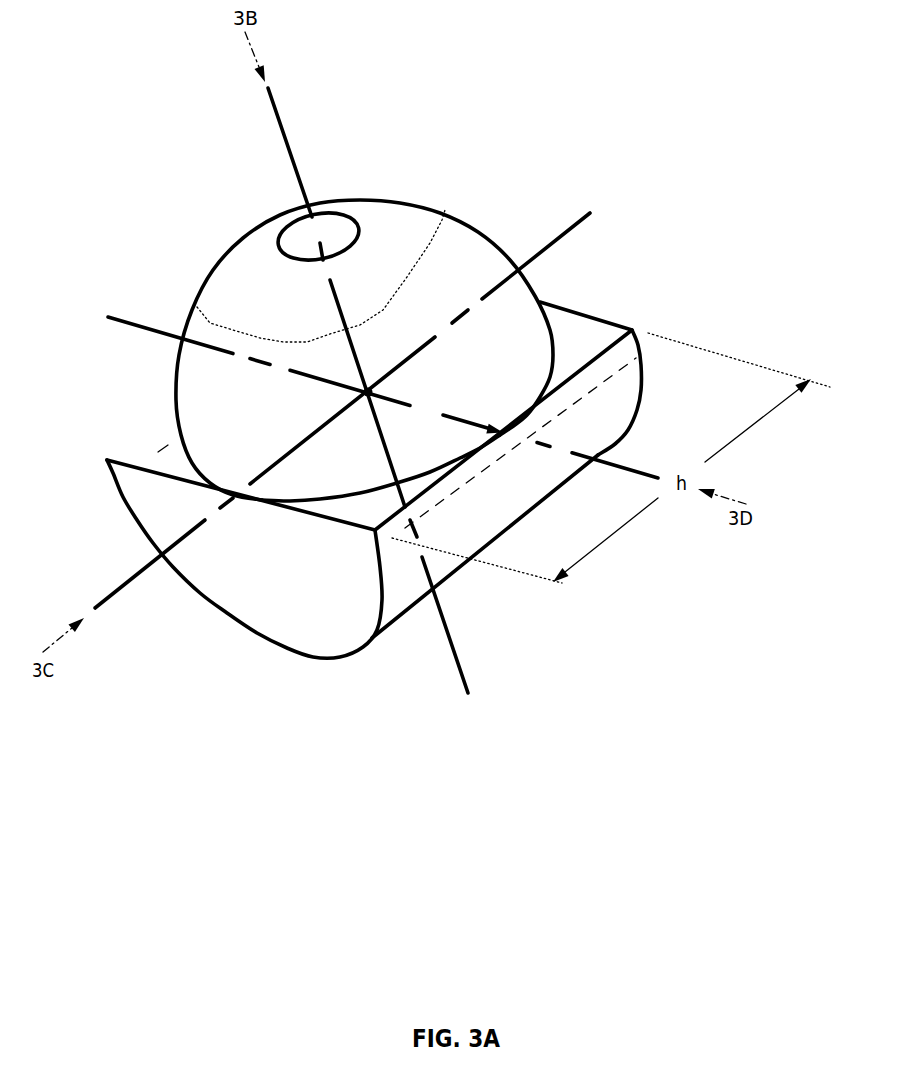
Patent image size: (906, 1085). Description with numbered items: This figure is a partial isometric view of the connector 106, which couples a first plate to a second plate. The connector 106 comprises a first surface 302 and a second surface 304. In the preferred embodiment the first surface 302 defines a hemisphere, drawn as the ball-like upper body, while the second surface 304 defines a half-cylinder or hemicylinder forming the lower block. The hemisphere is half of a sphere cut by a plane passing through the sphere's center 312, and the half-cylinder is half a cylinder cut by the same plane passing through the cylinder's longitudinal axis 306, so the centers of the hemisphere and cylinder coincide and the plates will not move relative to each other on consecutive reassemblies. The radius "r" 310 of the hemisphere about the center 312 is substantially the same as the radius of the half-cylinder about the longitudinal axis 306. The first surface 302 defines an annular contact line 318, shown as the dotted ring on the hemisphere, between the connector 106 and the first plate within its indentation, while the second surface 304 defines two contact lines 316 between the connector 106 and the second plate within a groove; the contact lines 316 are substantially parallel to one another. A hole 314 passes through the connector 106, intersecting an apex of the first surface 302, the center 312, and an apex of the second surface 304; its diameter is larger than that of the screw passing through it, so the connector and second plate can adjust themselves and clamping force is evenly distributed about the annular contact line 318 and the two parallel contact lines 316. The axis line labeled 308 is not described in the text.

The connector 106 is at (453, 121).
The first surface 302 is at (475, 257).
The second surface 304 is at (308, 660).
The longitudinal axis 306 is at (105, 607).
The vertical axis 308 is at (462, 657).
The radius "r" 310 is at (370, 392).
The center 312 is at (477, 417).
The hole 314 is at (338, 200).
The contact lines 316 is at (550, 427).
The annular contact line 318 is at (235, 332).